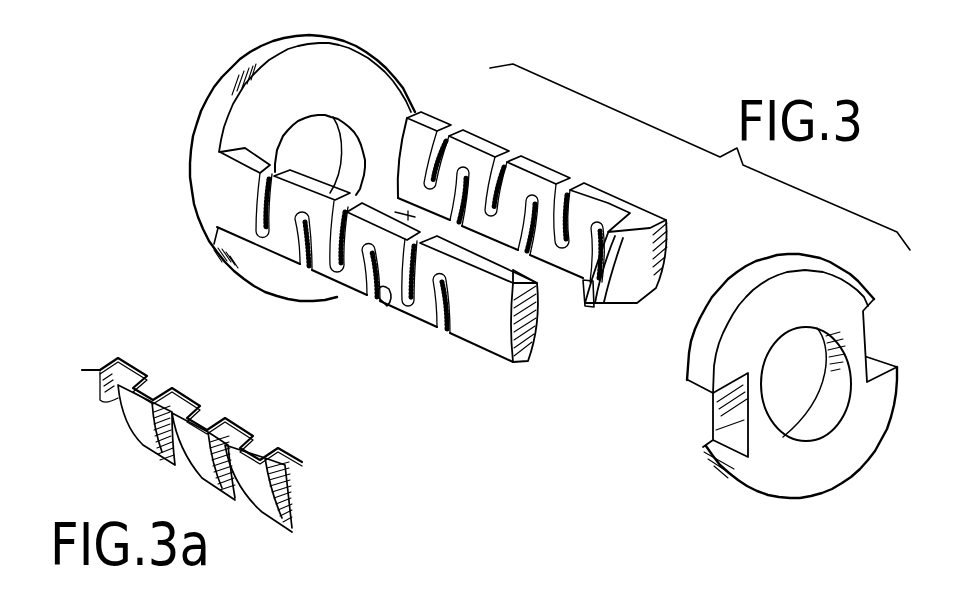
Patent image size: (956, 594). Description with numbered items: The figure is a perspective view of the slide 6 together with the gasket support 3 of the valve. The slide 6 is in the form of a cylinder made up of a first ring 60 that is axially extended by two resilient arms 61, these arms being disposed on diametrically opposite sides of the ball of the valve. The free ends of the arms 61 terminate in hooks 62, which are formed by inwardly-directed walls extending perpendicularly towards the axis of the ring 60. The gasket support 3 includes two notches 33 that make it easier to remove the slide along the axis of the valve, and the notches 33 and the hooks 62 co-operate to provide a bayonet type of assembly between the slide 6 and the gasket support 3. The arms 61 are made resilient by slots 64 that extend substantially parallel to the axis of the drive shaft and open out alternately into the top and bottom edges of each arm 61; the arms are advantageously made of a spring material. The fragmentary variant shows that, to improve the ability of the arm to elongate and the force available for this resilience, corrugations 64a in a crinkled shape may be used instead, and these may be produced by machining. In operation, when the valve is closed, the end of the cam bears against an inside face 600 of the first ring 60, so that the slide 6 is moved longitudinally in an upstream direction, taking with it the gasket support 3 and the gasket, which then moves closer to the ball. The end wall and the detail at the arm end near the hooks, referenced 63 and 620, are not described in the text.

In FIG. 3, the slide 6 is at (180, 163).
In FIG. 3, the first ring 60 is at (230, 98).
In FIG. 3, the inside face 600 is at (378, 66).
In FIG. 3, the resilient arms 61 is at (470, 330).
In FIG. 3, the hooks 62 is at (535, 327).
In FIG. 3, the tab 63 is at (590, 308).
In FIG. 3, the slots 64 is at (387, 308).
In FIG. 3, the notch 620 is at (608, 203).
In FIG. 3, the gasket support 3 is at (763, 278).
In FIG. 3, the notches 33 is at (868, 311).
In FIG. 3A, the corrugations 64a is at (167, 453).